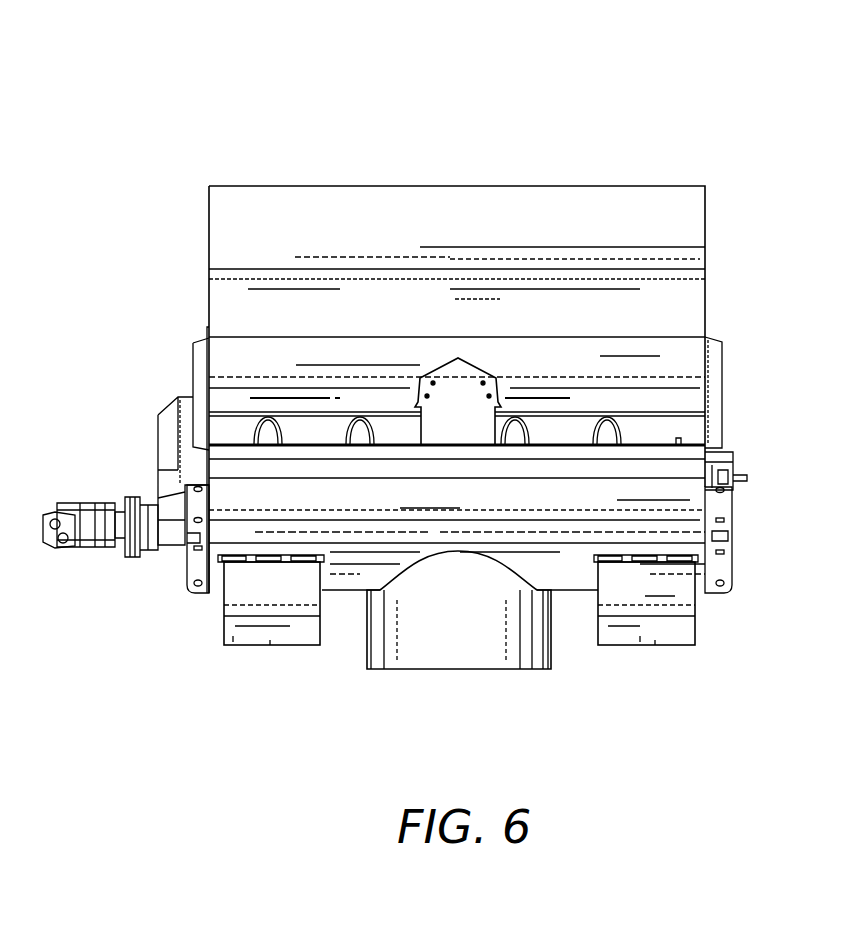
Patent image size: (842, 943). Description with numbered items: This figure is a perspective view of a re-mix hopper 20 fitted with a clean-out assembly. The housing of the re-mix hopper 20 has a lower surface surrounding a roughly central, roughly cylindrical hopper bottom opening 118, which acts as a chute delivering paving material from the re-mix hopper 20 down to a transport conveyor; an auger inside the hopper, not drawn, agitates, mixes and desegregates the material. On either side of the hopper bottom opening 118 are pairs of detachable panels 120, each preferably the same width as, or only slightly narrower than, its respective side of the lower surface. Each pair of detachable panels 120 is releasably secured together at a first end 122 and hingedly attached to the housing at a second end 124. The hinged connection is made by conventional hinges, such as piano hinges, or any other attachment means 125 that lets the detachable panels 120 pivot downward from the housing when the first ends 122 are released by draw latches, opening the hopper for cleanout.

The re-mix hopper 20 is at (224, 98).
The hopper bottom opening 118 is at (473, 608).
The detachable panels 120 is at (227, 636).
The first end 122 is at (293, 642).
The second end 124 is at (195, 578).
The attachment means 125 is at (258, 562).